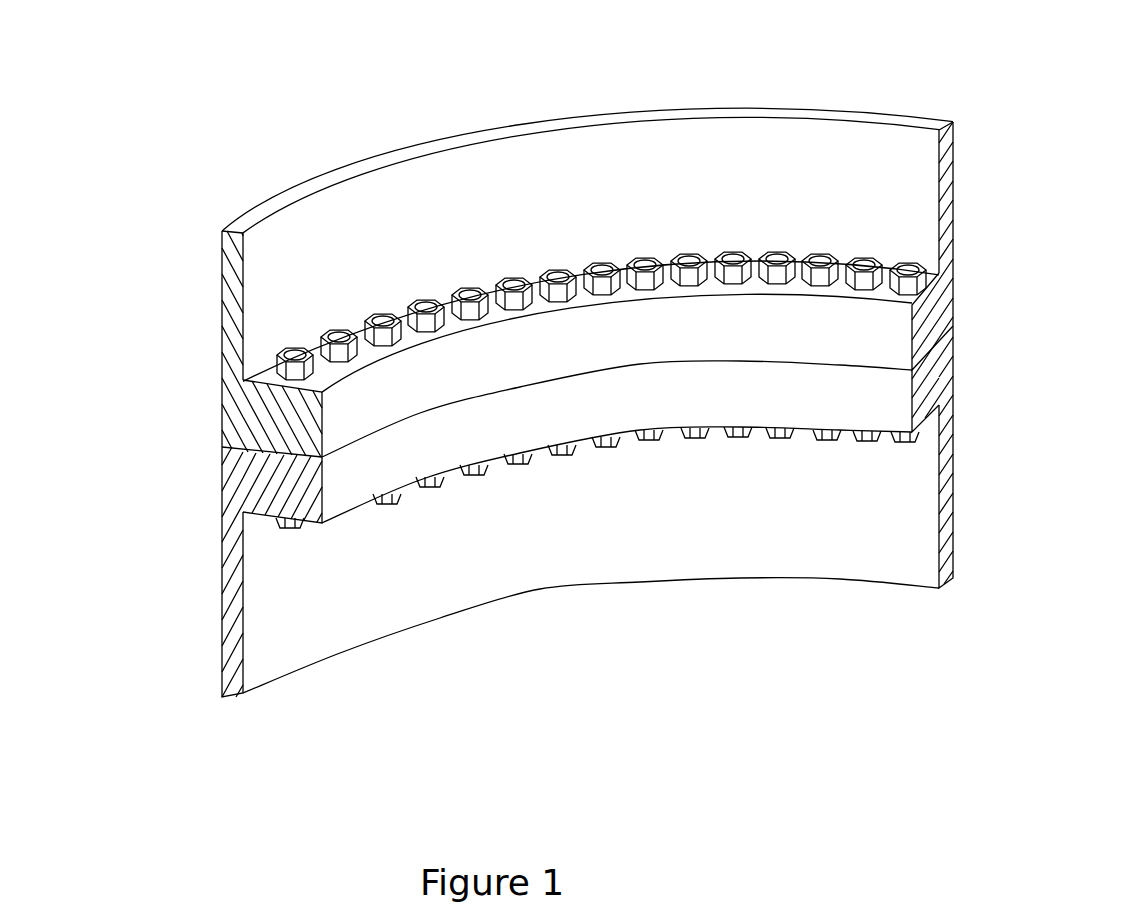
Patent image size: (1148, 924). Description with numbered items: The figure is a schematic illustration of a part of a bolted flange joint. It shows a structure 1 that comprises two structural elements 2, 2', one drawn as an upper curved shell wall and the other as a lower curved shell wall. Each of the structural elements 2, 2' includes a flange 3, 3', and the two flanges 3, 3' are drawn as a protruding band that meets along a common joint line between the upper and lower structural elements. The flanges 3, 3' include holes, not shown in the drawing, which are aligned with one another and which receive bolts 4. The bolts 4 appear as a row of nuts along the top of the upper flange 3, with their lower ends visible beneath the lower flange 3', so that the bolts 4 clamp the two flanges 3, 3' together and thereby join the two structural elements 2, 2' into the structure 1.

The structure 1 is at (175, 348).
The structural element 2 is at (517, 282).
The structural element 2' is at (519, 511).
The flange 3 is at (528, 289).
The flange 3' is at (522, 430).
The bolts 4 is at (300, 338).